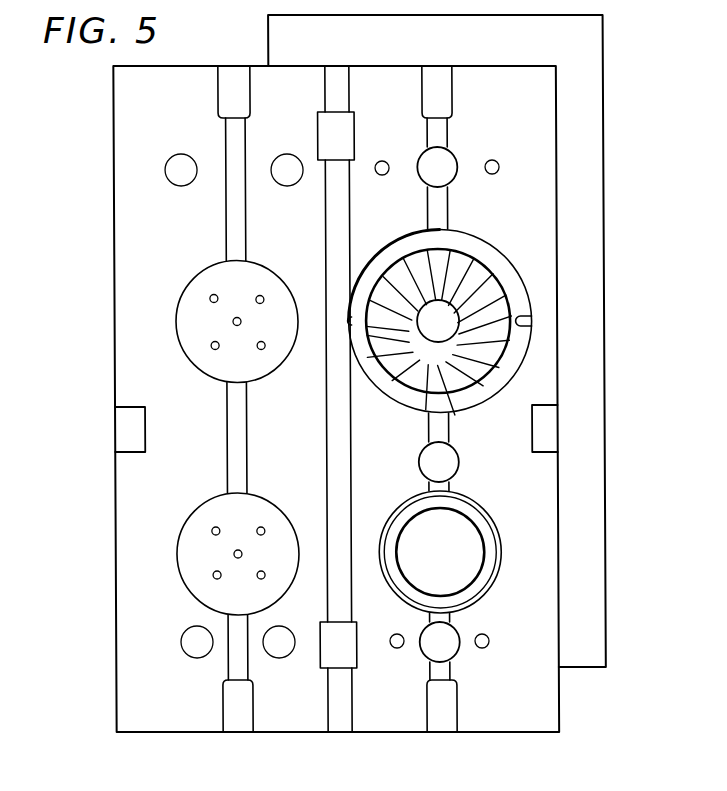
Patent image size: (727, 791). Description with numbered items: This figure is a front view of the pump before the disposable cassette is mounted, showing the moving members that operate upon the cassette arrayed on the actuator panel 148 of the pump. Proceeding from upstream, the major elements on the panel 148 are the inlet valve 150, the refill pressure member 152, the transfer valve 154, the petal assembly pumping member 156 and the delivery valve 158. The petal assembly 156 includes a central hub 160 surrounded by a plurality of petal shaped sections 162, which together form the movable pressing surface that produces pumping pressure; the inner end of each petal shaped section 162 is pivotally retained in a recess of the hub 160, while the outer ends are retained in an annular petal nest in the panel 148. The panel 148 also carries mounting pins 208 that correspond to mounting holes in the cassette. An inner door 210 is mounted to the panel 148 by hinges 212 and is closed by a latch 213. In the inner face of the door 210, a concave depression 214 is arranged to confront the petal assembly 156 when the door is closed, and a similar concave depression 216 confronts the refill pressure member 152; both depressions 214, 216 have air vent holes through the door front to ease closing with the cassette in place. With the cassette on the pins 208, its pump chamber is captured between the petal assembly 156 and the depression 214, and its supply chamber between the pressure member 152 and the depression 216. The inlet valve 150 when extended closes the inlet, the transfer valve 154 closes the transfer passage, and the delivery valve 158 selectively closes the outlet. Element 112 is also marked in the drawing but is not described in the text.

The guide block 112 is at (337, 112).
The panel 148 is at (553, 680).
The inlet valve 150 is at (448, 652).
The refill pressure member 152 is at (470, 562).
The transfer valve 154 is at (452, 464).
The petal assembly pumping member 156 is at (522, 365).
The delivery valve 158 is at (458, 173).
The central hub 160 is at (450, 309).
The petal shaped sections 162 is at (500, 330).
The mounting pins 208 is at (493, 160).
The inner door 210 is at (117, 677).
The hinges 212 is at (333, 666).
The latch 213 is at (118, 438).
The concave depression 214 is at (182, 327).
The concave depression 216 is at (180, 563).